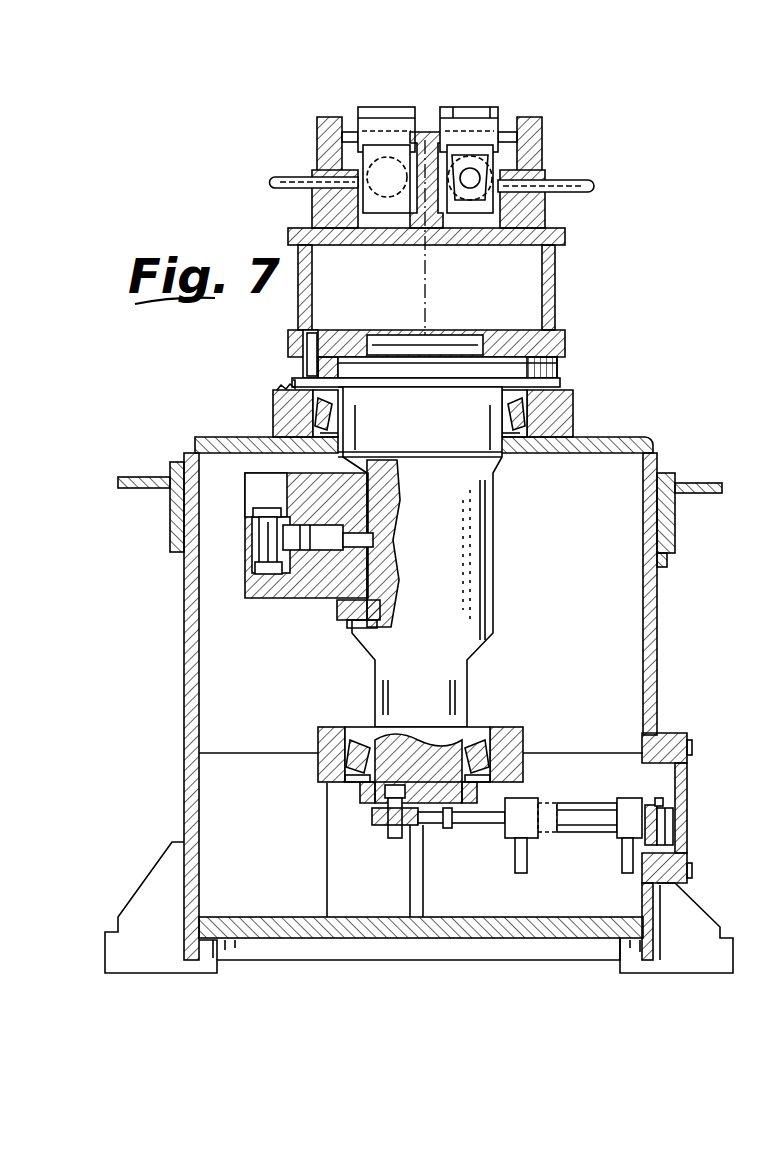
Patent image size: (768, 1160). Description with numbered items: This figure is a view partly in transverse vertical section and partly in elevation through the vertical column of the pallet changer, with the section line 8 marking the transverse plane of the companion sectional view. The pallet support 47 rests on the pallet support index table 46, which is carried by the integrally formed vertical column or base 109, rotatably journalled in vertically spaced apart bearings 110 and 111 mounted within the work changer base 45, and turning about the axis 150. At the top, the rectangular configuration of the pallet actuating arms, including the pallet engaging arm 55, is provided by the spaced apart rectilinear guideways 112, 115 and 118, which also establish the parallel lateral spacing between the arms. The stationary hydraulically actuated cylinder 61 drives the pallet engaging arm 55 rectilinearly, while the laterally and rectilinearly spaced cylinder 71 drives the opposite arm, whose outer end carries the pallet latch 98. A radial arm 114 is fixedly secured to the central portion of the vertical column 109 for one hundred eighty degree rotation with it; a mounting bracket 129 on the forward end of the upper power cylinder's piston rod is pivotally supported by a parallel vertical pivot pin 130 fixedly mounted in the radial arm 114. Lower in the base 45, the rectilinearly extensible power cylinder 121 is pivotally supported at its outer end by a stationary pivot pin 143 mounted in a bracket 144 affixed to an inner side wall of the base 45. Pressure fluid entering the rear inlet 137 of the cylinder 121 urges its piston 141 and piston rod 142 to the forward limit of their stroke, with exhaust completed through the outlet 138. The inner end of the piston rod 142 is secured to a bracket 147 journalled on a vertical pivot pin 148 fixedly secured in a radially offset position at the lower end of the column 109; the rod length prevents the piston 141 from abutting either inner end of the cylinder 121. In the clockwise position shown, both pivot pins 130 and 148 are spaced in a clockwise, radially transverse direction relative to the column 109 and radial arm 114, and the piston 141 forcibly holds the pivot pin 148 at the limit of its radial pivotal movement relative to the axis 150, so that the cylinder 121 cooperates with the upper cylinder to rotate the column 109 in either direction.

The section line 8- 8 is at (137, 558).
The work changer base 45 is at (662, 604).
The pallet support index table 46 is at (563, 372).
The pallet support 47 is at (553, 284).
The pallet engaging arm 55 is at (372, 108).
The hydraulically actuated cylinder 61 is at (363, 198).
The cylinder 71 is at (478, 203).
The pallet latch 98 is at (475, 112).
The vertical column 109 is at (477, 537).
The bearing 110 is at (277, 413).
The bearing 111 is at (337, 760).
The rectilinear guideway 112 is at (345, 135).
The radial arm 114 is at (253, 597).
The rectilinear guideway 115 is at (422, 133).
The rectilinear guideway 118 is at (507, 132).
The power cylinder 121 is at (587, 803).
The mounting bracket 129 is at (297, 550).
The vertical pivot pin 130 is at (270, 508).
The rear inlet 137 is at (623, 855).
The outlet 138 is at (515, 855).
The piston 141 is at (548, 800).
The piston rod 142 is at (460, 818).
The stationary pivot pin 143 is at (657, 798).
The bracket 144 is at (675, 830).
The bracket 147 is at (372, 820).
The vertical pivot pin 148 is at (393, 835).
The axis 150 is at (432, 300).